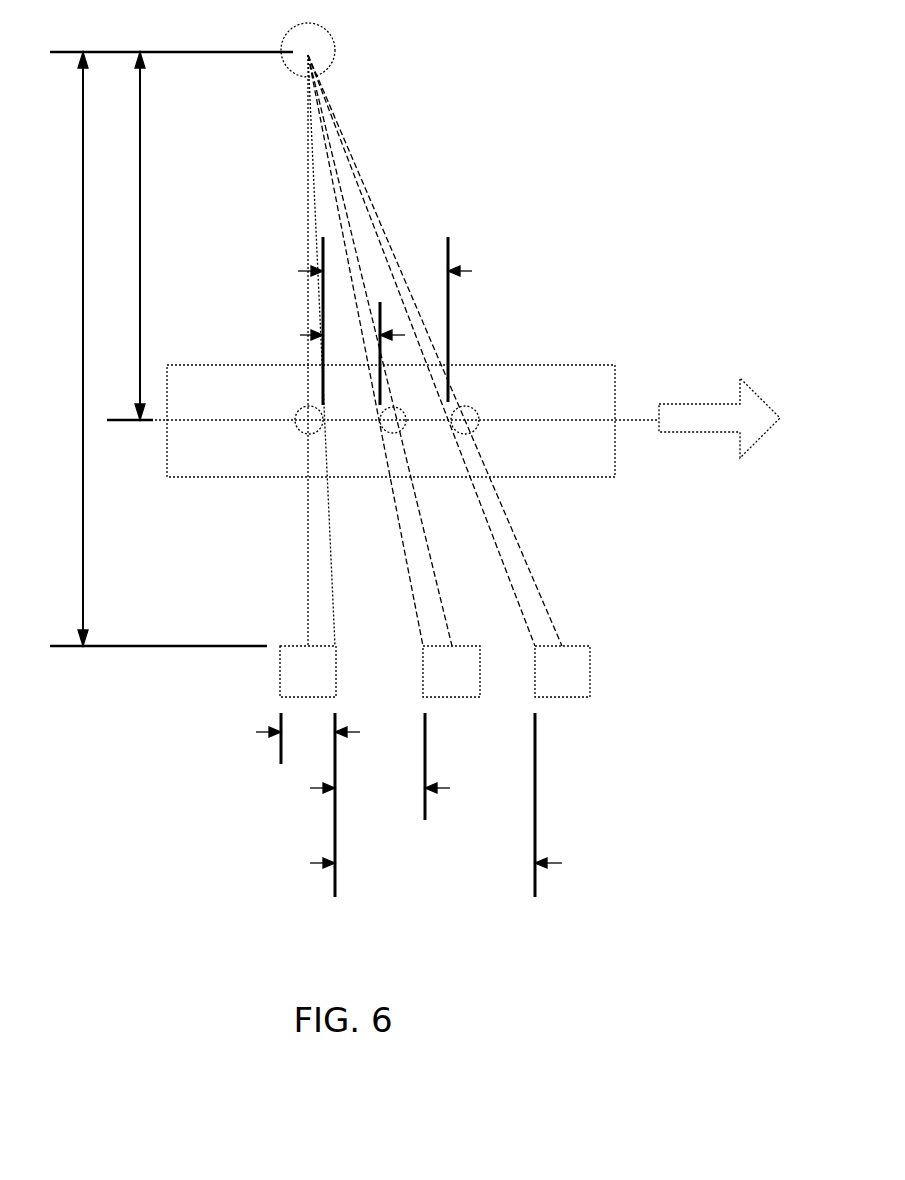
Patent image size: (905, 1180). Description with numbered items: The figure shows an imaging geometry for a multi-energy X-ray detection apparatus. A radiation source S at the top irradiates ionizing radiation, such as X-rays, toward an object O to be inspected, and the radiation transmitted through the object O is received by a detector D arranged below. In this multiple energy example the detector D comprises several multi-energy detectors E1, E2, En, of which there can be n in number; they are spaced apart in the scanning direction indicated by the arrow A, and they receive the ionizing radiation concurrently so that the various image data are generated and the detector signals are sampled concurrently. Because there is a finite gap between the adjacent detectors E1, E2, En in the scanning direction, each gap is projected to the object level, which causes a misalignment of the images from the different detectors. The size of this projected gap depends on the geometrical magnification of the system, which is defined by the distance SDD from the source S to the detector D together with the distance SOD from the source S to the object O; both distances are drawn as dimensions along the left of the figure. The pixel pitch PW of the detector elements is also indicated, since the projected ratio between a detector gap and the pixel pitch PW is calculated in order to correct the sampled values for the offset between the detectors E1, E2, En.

The radiation source S is at (376, 40).
The object O is at (650, 352).
The arrow indicating scanning direction A is at (719, 418).
The detector D is at (518, 662).
The first multi-energy detector E1 is at (308, 671).
The second multi-energy detector E2 is at (451, 671).
The n-th multi-energy detector En is at (562, 671).
The source to detector distance SDD is at (155, 349).
The source to object distance SOD is at (124, 236).
The pixel pitch PW is at (285, 733).